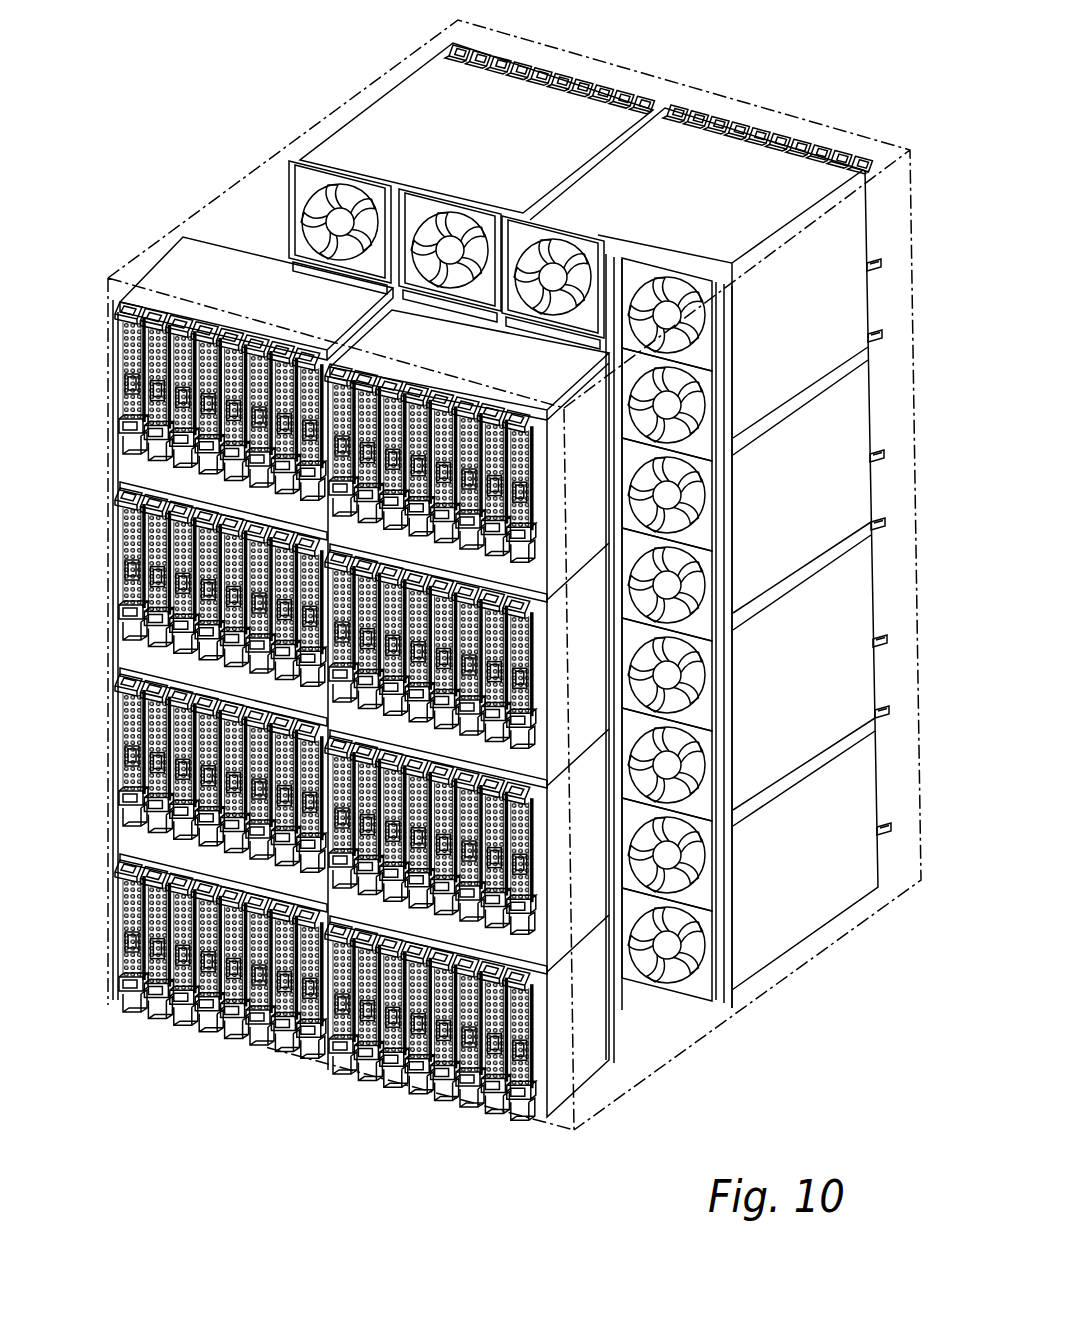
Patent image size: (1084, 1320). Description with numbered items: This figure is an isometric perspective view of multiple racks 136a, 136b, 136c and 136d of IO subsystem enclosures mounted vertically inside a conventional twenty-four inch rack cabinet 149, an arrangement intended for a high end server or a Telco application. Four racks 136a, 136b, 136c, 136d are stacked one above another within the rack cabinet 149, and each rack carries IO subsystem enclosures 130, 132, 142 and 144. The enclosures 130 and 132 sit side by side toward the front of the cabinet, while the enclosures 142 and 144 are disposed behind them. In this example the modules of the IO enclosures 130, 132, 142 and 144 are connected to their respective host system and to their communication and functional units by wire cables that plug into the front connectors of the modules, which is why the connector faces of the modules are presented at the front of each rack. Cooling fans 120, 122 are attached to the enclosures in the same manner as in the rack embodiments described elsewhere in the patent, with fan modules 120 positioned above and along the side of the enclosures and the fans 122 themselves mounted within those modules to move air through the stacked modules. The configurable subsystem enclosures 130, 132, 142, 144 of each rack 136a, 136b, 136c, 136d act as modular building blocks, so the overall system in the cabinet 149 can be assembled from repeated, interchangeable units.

The cooling fan 120 is at (302, 181).
The cooling fan 122 is at (422, 207).
The IO subsystem enclosure 130 is at (222, 647).
The IO subsystem enclosure 132 is at (482, 365).
The rack 136a is at (133, 355).
The rack 136b is at (137, 535).
The rack 136c is at (139, 721).
The rack 136d is at (142, 901).
The IO subsystem enclosure 142 is at (499, 127).
The IO subsystem enclosure 144 is at (728, 183).
The rack cabinet 149 is at (190, 217).